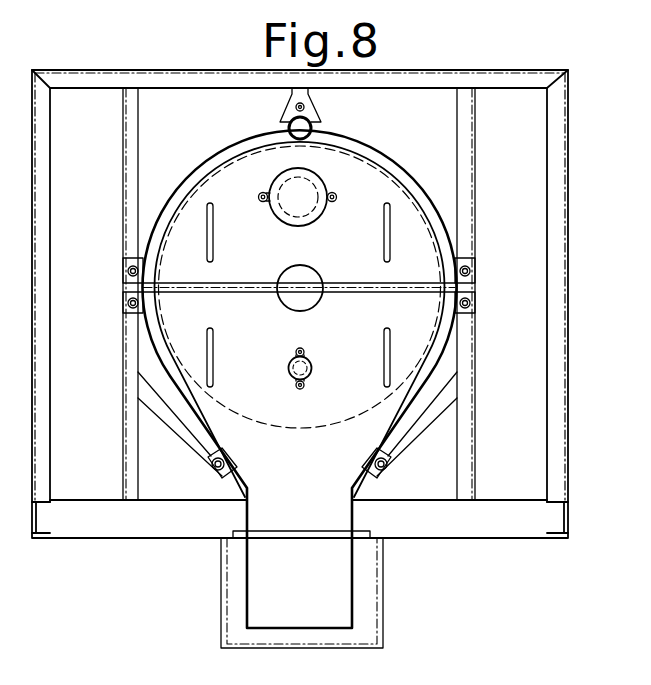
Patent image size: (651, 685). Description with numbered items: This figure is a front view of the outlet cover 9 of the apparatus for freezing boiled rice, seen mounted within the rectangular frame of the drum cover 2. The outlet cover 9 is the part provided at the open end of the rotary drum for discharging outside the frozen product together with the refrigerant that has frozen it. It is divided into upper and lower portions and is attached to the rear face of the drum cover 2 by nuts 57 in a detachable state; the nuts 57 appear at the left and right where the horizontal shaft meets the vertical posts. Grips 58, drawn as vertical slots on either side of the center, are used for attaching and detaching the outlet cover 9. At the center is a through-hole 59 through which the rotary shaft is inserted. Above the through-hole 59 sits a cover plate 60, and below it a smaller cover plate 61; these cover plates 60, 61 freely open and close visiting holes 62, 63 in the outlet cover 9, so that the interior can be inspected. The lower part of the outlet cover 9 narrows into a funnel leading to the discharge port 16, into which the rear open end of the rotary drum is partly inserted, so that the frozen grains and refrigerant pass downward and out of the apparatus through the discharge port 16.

The drum cover 2 is at (572, 180).
The outlet cover 9 is at (412, 182).
The discharge port 16 is at (374, 148).
The nuts 57 is at (128, 266).
The grip 58 is at (388, 242).
The through-hole 59 is at (305, 284).
The cover plate 60 is at (329, 186).
The cover plate 61 is at (309, 376).
The visiting hole 62 is at (266, 192).
The visiting hole 63 is at (308, 355).